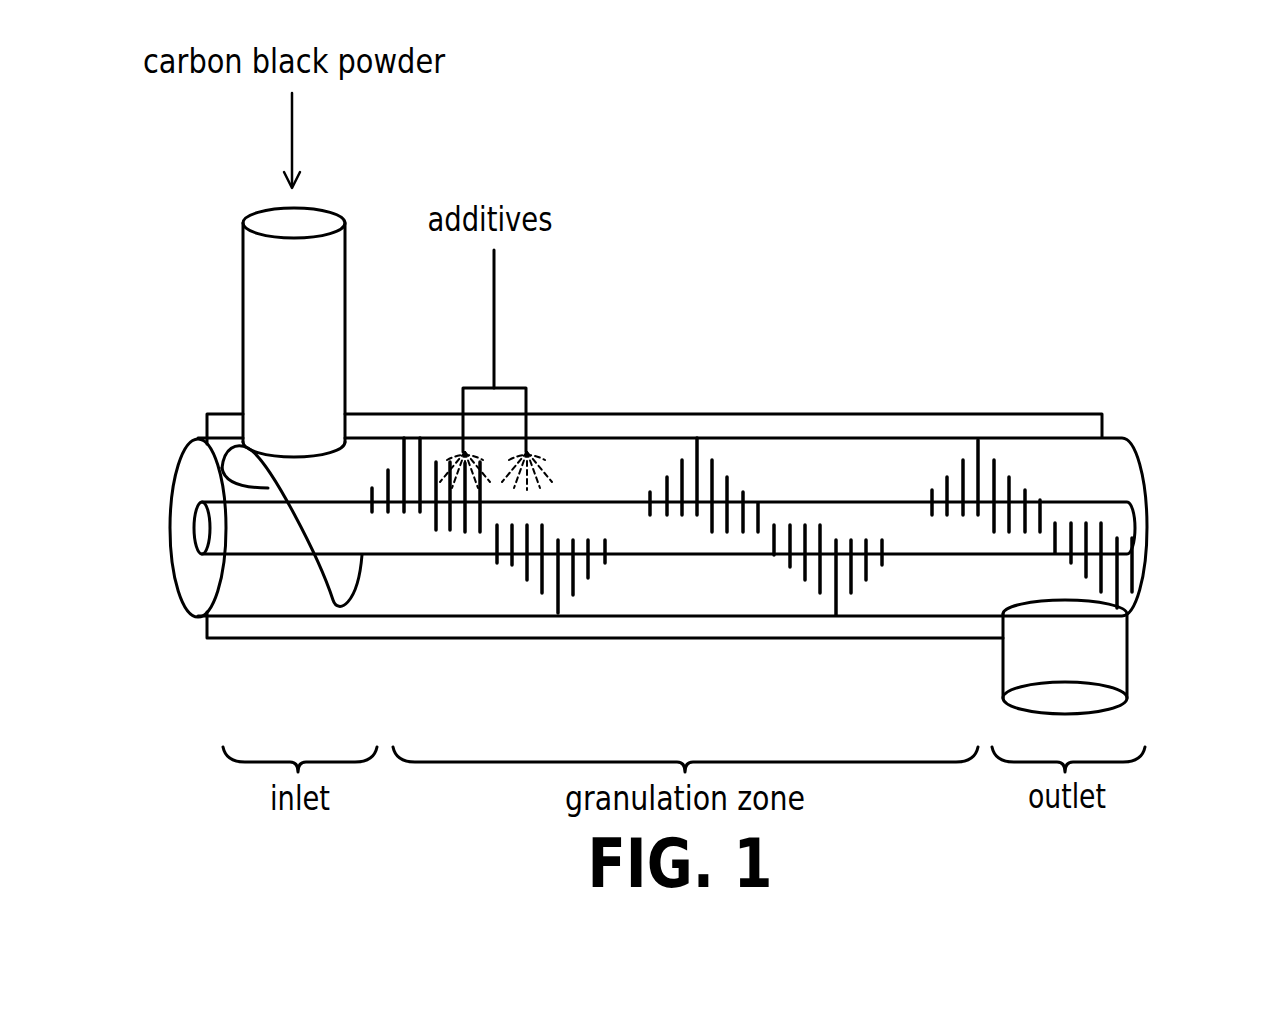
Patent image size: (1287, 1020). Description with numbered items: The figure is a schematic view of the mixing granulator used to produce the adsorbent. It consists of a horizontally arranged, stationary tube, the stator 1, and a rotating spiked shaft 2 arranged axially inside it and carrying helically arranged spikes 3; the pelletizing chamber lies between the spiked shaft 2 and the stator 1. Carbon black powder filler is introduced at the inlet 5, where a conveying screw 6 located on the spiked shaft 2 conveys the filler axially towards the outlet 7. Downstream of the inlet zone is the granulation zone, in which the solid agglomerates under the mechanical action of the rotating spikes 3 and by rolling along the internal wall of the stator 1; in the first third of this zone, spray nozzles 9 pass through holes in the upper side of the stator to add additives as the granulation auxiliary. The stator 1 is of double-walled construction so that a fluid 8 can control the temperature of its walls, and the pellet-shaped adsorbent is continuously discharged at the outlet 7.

The stator 1 is at (842, 437).
The spiked shaft 2 is at (1118, 517).
The spikes 3 is at (1012, 488).
The inlet 5 is at (280, 352).
The conveying screw 6 is at (245, 487).
The outlet 7 is at (1108, 644).
The fluid 8 is at (685, 413).
The spray nozzles 9 is at (465, 404).